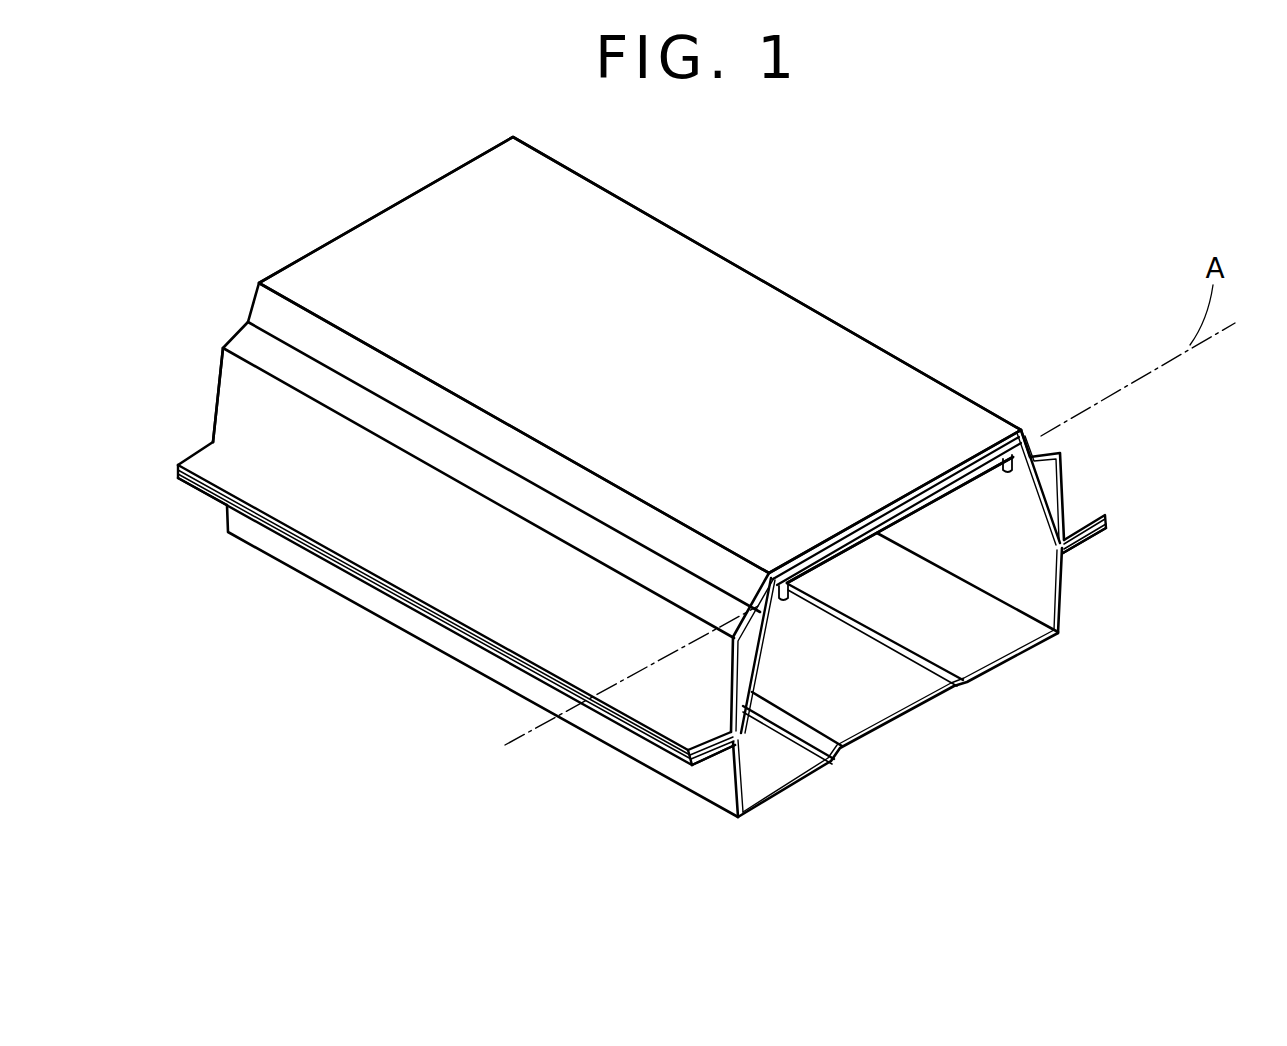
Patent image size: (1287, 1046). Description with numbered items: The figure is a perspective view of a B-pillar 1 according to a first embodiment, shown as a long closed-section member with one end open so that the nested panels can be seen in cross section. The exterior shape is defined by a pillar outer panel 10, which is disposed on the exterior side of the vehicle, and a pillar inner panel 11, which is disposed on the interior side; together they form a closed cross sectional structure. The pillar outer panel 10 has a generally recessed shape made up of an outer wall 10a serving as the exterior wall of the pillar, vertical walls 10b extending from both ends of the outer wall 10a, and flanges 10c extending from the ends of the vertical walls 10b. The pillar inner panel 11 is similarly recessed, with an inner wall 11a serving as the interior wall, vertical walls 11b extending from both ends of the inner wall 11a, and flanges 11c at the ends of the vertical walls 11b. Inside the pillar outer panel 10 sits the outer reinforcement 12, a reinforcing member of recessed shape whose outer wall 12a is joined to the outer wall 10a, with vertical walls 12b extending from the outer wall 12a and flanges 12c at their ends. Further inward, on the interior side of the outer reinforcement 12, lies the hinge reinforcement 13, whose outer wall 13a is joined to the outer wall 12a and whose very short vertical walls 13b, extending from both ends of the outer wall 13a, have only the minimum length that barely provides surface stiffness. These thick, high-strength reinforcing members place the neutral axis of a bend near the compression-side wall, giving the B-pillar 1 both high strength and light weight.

The B-pillar 1 is at (842, 228).
The pillar outer panel 10 is at (1062, 448).
The outer wall 10a is at (840, 356).
The vertical walls 10b is at (687, 667).
The flanges 10c is at (678, 733).
The pillar inner panel 11 is at (1070, 578).
The inner wall 11a is at (983, 677).
The vertical walls 11b is at (728, 786).
The flanges 11c is at (705, 762).
The outer reinforcement 12 is at (1043, 492).
The outer wall 12a is at (845, 535).
The vertical walls 12b is at (1027, 515).
The flanges 12c is at (1037, 640).
The hinge reinforcement 13 is at (907, 518).
The outer wall 13a is at (848, 553).
The vertical walls 13b is at (1004, 472).